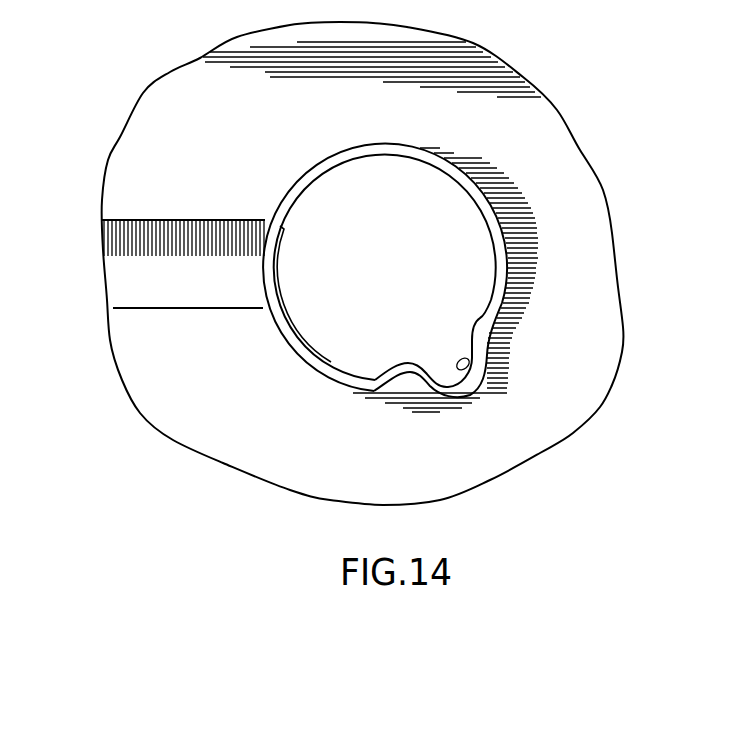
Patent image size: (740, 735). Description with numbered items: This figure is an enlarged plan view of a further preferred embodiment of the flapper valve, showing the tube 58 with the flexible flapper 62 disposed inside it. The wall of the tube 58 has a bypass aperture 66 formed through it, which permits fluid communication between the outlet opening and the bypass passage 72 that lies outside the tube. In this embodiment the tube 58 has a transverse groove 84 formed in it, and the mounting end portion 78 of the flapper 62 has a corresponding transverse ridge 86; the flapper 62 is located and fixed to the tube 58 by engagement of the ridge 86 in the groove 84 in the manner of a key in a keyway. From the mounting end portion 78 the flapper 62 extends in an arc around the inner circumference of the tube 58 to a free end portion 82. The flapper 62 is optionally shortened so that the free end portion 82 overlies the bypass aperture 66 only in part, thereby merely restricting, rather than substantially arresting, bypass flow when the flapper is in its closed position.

The tube 58 is at (327, 167).
The flapper 62 is at (318, 357).
The bypass aperture 66 is at (262, 279).
The bypass passage 72 is at (138, 286).
The mounting end portion 78 is at (458, 331).
The free end portion 82 is at (295, 236).
The transverse groove 84 is at (468, 370).
The transverse ridge 86 is at (454, 380).